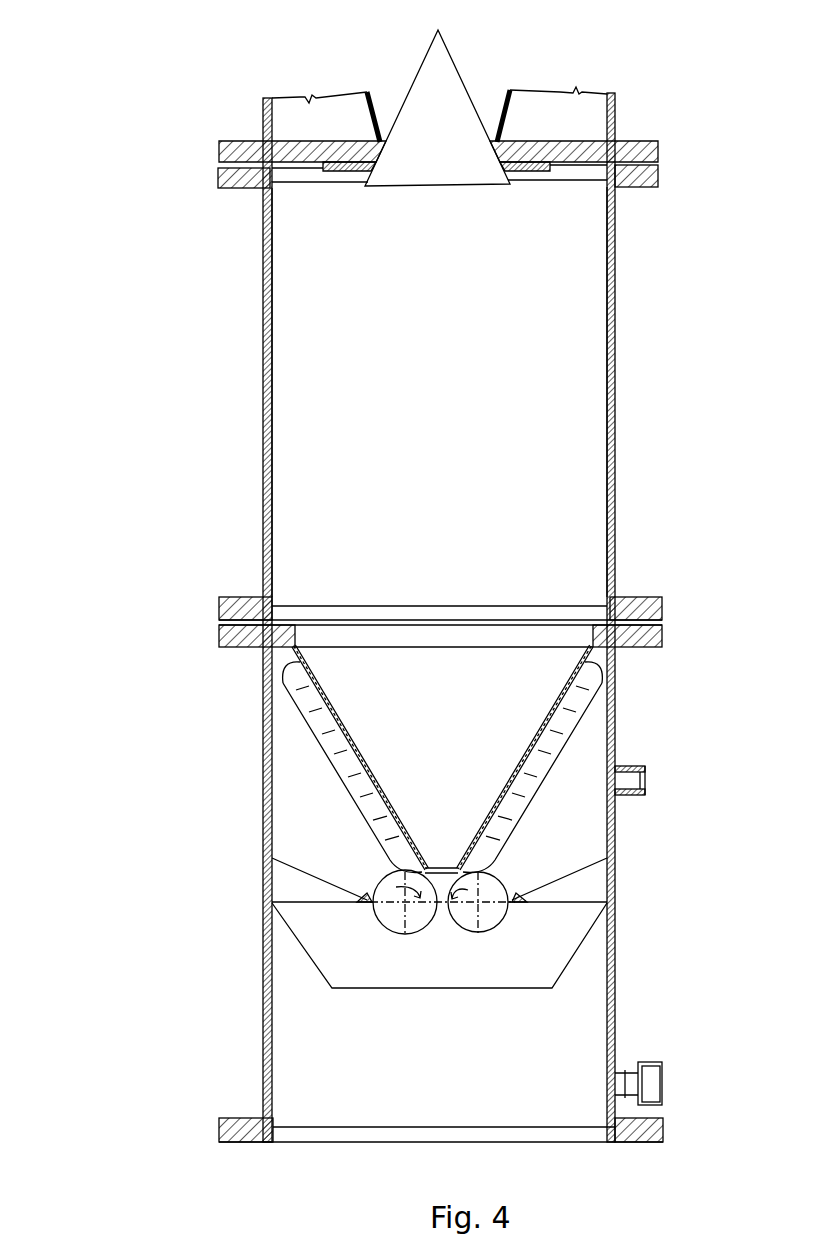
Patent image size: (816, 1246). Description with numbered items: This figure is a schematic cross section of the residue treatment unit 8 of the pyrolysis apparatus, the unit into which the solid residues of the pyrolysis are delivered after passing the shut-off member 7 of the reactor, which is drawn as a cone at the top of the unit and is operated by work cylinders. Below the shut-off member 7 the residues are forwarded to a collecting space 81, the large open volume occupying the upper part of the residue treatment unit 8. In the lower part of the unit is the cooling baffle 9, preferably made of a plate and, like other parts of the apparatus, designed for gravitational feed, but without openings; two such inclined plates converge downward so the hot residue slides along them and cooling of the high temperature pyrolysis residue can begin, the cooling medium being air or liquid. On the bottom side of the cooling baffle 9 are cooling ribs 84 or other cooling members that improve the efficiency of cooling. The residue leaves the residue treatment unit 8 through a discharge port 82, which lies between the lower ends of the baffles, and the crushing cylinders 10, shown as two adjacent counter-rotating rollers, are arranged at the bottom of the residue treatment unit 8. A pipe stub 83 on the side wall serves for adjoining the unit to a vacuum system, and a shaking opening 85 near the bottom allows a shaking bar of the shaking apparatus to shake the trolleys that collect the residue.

The shut-off member 7 is at (423, 60).
The residue treatment unit 8 is at (222, 334).
The collecting space 81 is at (437, 334).
The discharge port 82 is at (438, 830).
The pipe stub 83 is at (642, 795).
The cooling ribs 84 is at (287, 683).
The shaking opening 85 is at (648, 1060).
The cooling baffle 9 is at (303, 722).
The crushing cylinders 10 is at (497, 940).